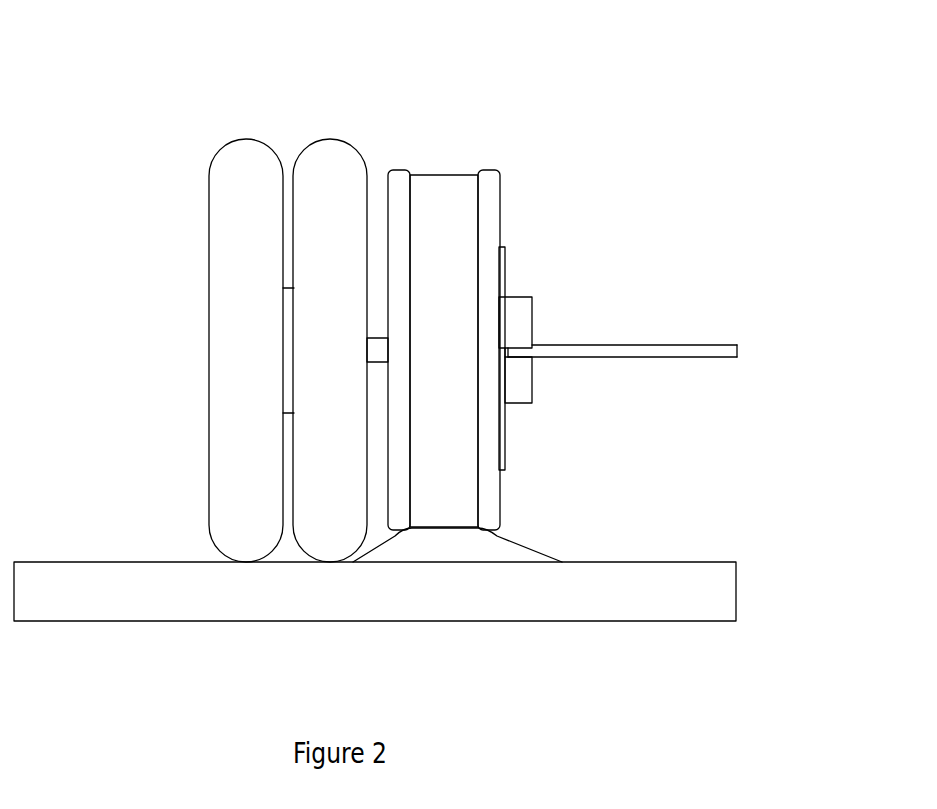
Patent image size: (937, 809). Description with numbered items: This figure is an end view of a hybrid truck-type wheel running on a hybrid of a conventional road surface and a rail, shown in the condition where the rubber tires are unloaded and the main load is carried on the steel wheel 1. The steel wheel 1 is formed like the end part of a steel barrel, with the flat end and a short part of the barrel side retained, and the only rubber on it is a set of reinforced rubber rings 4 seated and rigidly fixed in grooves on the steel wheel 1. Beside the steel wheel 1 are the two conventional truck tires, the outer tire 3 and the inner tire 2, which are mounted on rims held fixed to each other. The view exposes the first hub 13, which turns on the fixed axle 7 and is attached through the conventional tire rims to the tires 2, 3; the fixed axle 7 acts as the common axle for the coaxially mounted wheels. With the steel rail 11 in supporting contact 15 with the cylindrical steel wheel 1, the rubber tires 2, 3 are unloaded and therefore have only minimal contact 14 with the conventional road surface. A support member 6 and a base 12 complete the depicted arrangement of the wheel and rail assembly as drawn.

The steel wheel 1 is at (448, 173).
The inner rubber tire 2 is at (345, 141).
The outer rubber tire 3 is at (242, 138).
The rubber rings 4 is at (400, 173).
The support bracket 6 is at (505, 268).
The fixed axle 7 is at (660, 345).
The steel rail 11 is at (524, 540).
The base plate 12 is at (673, 562).
The first hub 13 is at (378, 338).
The minimal contact 14 is at (334, 562).
The supporting contact 15 is at (445, 526).